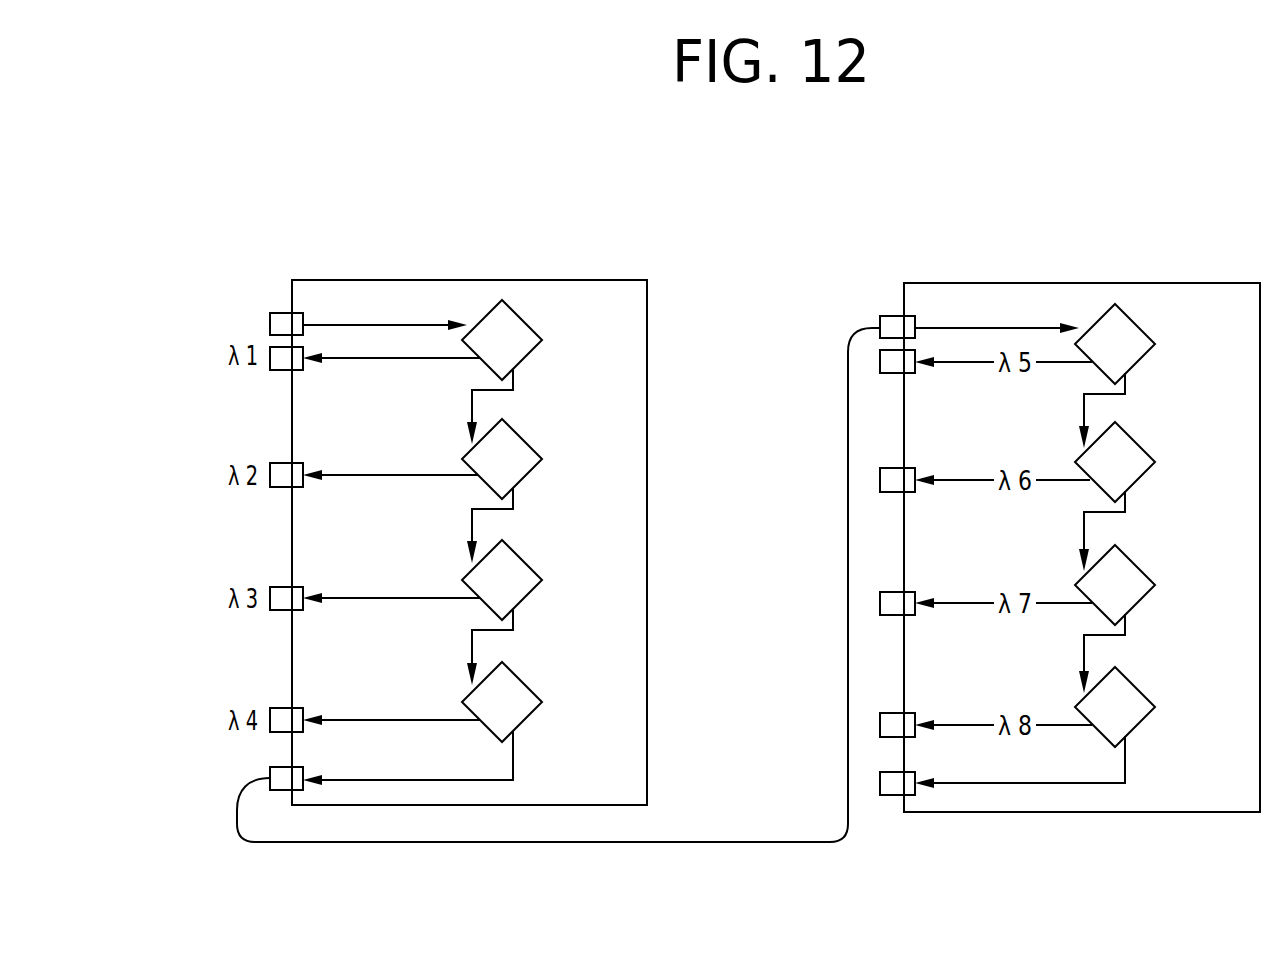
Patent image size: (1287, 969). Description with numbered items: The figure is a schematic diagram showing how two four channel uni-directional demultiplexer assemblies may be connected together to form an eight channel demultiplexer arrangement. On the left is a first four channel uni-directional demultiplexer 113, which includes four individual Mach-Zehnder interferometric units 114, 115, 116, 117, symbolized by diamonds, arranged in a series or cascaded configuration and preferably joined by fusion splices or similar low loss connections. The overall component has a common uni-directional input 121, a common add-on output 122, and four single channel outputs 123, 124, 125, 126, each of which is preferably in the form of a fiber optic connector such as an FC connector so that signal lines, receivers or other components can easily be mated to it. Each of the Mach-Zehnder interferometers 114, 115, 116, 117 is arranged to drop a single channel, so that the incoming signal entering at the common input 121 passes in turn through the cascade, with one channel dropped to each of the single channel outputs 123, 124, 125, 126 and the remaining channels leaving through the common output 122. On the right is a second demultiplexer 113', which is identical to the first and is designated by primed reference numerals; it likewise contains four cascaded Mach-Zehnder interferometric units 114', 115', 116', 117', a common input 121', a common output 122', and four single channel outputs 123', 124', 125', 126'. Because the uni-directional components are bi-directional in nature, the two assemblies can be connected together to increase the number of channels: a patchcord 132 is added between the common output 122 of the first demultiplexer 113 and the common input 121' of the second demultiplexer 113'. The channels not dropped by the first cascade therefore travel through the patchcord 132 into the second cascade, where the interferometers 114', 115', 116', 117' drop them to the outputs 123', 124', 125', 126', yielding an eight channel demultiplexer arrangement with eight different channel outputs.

The four channel uni-directional demultiplexer 113 is at (469, 519).
The Mach-Zehnder interferometric unit 114 is at (535, 337).
The Mach-Zehnder interferometric unit 115 is at (535, 455).
The Mach-Zehnder interferometric unit 116 is at (535, 577).
The Mach-Zehnder interferometric unit 117 is at (535, 699).
The common uni-directional input 121 is at (265, 304).
The common add-on output 122 is at (320, 762).
The single channel output 123 is at (320, 378).
The single channel output 124 is at (320, 496).
The single channel output 125 is at (320, 620).
The single channel output 126 is at (320, 701).
The patchcord 132 is at (527, 843).
The four channel uni-directional demultiplexer 113' is at (1082, 523).
The Mach-Zehnder interferometric unit 114' is at (1152, 341).
The Mach-Zehnder interferometric unit 115' is at (1152, 457).
The Mach-Zehnder interferometric unit 116' is at (1152, 581).
The Mach-Zehnder interferometric unit 117' is at (1152, 702).
The common uni-directional input 121' is at (875, 303).
The common add-on output 122' is at (908, 817).
The single channel output 123' is at (934, 382).
The single channel output 124' is at (934, 499).
The single channel output 125' is at (934, 624).
The single channel output 126' is at (934, 706).